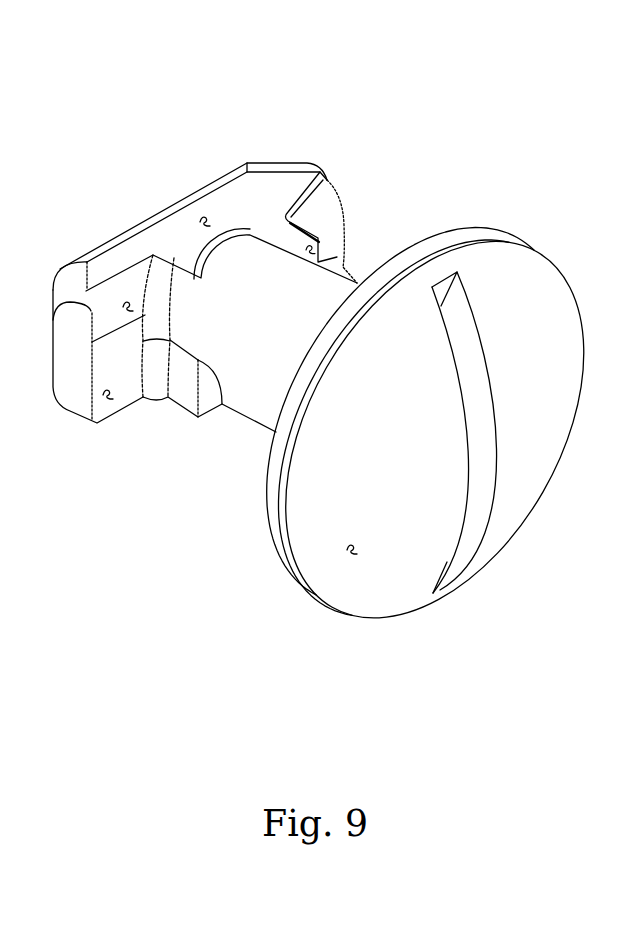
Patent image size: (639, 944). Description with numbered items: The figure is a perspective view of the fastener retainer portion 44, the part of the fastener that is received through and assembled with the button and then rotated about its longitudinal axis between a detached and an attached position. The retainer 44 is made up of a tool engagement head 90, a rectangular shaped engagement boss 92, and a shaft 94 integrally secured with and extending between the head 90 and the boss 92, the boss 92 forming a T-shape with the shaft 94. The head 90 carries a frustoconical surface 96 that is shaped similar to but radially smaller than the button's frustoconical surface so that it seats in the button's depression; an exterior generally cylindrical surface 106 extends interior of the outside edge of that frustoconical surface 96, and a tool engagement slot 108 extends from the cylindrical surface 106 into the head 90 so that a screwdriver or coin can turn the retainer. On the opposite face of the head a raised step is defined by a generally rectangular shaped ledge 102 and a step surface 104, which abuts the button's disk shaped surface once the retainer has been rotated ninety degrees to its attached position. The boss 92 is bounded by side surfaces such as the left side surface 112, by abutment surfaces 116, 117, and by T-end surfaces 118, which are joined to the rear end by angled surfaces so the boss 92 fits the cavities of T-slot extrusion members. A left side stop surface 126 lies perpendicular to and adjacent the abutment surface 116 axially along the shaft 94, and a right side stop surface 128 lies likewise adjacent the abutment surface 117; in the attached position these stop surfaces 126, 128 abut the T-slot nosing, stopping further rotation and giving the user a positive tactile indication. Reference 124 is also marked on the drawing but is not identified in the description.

The fastener retainer portion 44 is at (499, 108).
The tool engagement head 90 is at (543, 293).
The rectangular shaped engagement boss 92 is at (264, 158).
The shaft 94 is at (252, 421).
The frustoconical surface 96 is at (426, 243).
The rectangular shaped ledge 102 is at (9, 175).
The step surface 104 is at (9, 264).
The exterior generally cylindrical surface 106 is at (347, 554).
The tool engagement slot 108 is at (460, 578).
The left side surface 112 is at (198, 213).
The abutment surface 116 is at (329, 172).
The abutment surface 117 is at (113, 397).
The T-end surfaces 118 is at (75, 416).
The sloped surface 124 is at (125, 296).
The left side stop surface 126 is at (322, 206).
The right side stop surface 128 is at (178, 396).